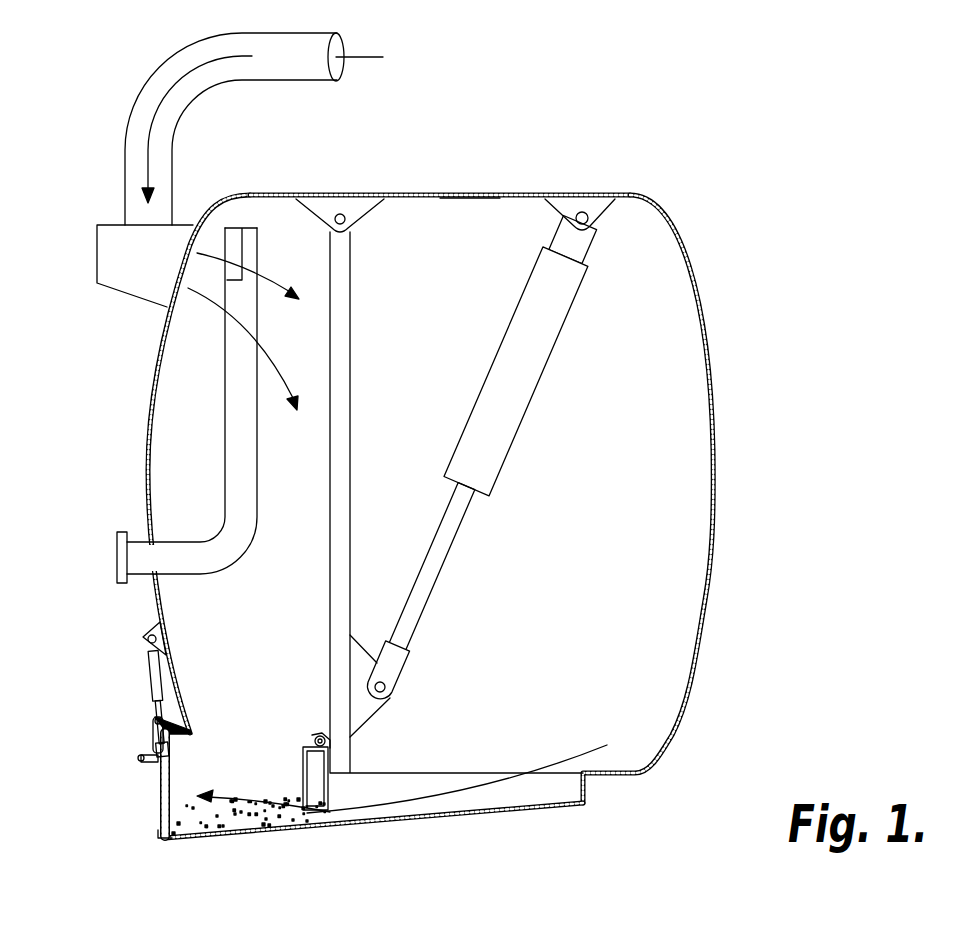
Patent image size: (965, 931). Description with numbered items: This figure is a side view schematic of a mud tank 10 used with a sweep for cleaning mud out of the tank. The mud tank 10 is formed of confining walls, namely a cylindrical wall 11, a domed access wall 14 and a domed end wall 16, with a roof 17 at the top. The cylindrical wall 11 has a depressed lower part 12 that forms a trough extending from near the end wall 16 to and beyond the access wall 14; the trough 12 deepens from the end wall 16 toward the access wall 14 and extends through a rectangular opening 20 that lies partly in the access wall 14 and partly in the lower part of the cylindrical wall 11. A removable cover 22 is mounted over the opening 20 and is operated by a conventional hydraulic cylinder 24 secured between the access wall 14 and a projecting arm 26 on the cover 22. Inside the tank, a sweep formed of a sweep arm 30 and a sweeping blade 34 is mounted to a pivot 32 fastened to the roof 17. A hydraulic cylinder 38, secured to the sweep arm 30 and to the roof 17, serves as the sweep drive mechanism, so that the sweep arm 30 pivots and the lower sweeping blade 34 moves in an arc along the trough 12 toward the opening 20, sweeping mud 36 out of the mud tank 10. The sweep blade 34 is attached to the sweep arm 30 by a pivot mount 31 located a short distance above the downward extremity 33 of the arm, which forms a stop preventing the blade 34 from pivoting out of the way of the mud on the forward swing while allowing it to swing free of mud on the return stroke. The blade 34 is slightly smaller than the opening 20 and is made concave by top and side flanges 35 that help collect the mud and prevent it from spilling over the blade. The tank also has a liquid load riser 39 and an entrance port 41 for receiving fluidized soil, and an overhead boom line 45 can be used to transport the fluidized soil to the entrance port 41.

The mud tank 10 is at (778, 390).
The cylindrical wall 11 is at (442, 195).
The lower part (trough) 12 is at (527, 810).
The access wall 14 is at (150, 428).
The end wall 16 is at (716, 548).
The roof 17 is at (470, 198).
The opening 20 is at (178, 781).
The removable cover 22 is at (160, 819).
The hydraulic cylinder 24 is at (143, 683).
The projecting arm 26 is at (139, 757).
The sweep arm 30 is at (353, 388).
The pivot mount 31 is at (316, 737).
The pivot 32 is at (338, 214).
The downward extremity 33 is at (352, 748).
The sweeping blade 34 is at (338, 790).
The flanges 35 is at (303, 775).
The mud 36 is at (225, 818).
The hydraulic cylinder 38 is at (540, 369).
The liquid load riser 39 is at (235, 555).
The entrance port 41 is at (138, 288).
The overhead boom line 45 is at (340, 72).